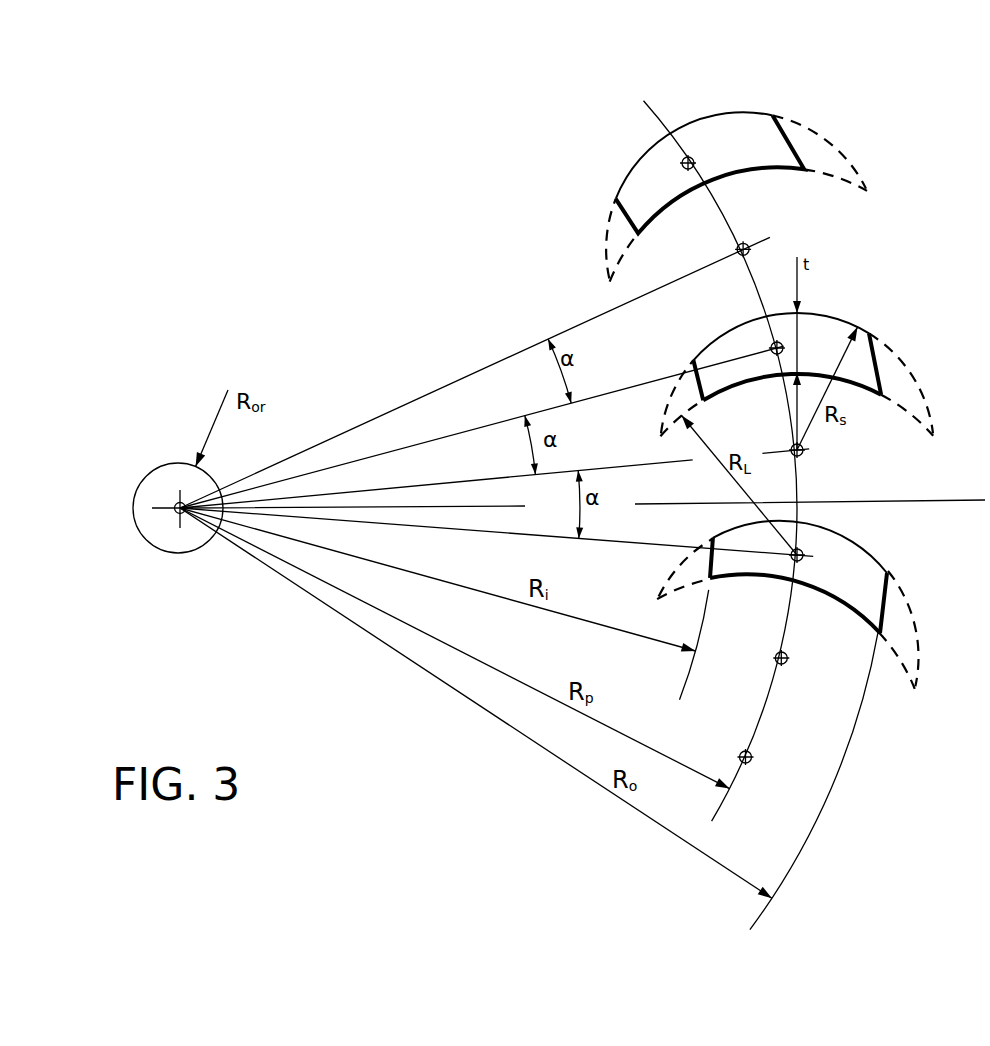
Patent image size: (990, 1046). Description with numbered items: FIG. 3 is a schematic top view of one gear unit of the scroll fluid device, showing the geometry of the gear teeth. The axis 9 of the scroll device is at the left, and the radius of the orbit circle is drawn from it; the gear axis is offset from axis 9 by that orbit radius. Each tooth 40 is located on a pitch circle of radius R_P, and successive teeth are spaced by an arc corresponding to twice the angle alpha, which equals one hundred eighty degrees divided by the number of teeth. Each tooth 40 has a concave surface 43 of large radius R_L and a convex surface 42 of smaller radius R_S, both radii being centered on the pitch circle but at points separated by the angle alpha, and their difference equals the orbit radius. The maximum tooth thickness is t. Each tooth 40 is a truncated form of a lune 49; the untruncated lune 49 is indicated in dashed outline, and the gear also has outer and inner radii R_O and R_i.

The axis 9 is at (195, 476).
The tooth 40 is at (770, 383).
The convex surface 42 is at (870, 548).
The concave surface 43 is at (852, 613).
The lune 49 is at (849, 160).